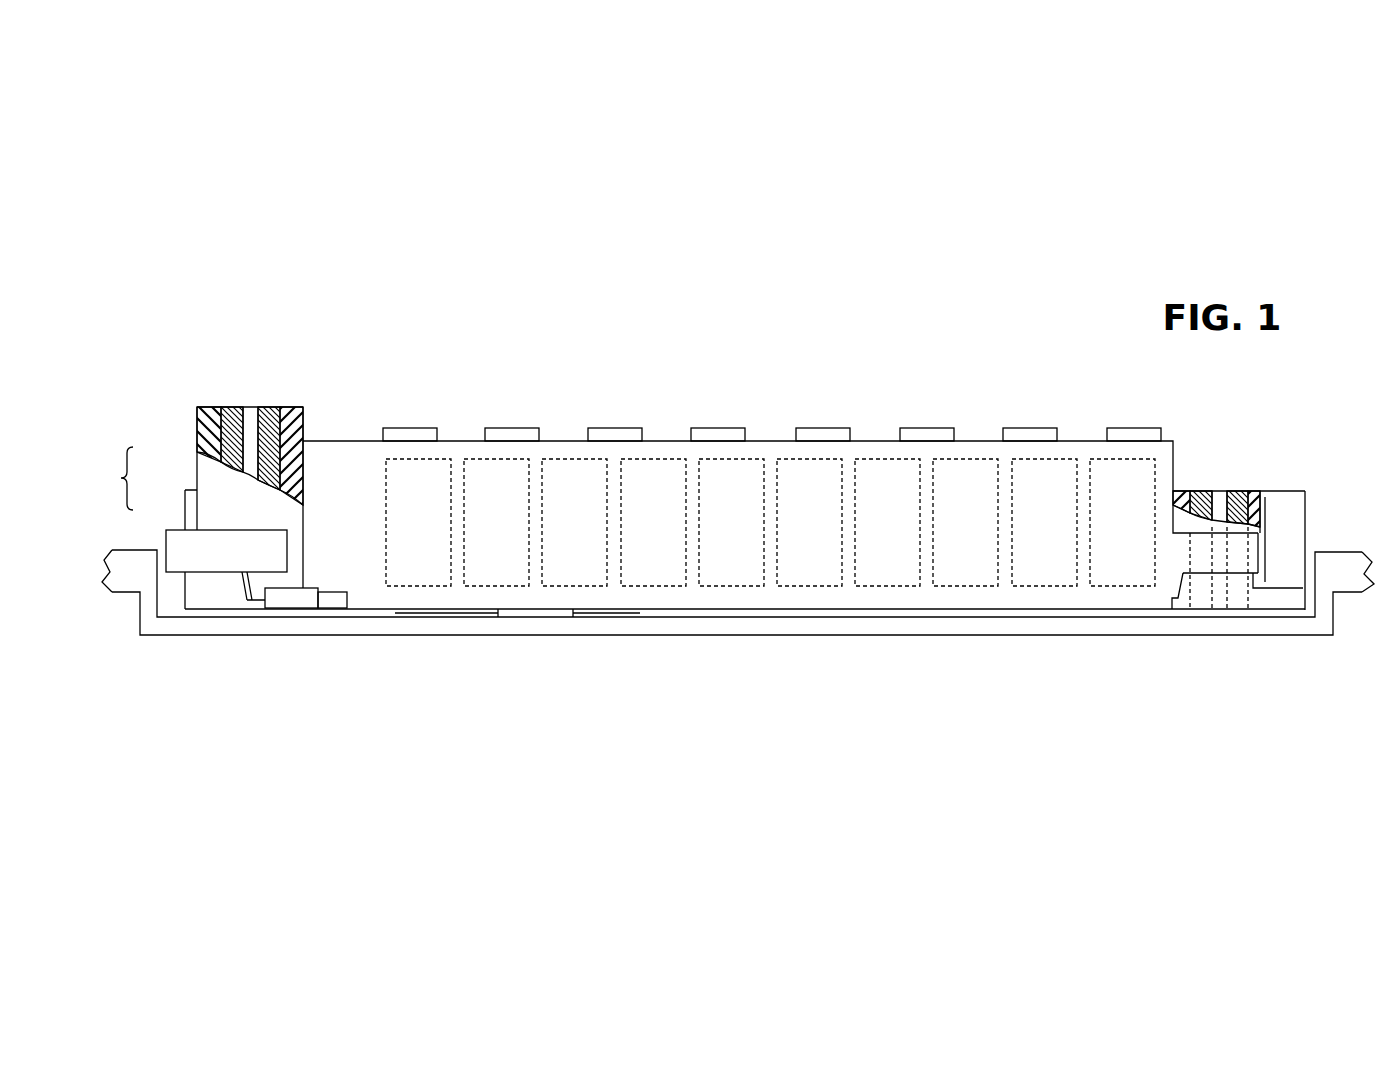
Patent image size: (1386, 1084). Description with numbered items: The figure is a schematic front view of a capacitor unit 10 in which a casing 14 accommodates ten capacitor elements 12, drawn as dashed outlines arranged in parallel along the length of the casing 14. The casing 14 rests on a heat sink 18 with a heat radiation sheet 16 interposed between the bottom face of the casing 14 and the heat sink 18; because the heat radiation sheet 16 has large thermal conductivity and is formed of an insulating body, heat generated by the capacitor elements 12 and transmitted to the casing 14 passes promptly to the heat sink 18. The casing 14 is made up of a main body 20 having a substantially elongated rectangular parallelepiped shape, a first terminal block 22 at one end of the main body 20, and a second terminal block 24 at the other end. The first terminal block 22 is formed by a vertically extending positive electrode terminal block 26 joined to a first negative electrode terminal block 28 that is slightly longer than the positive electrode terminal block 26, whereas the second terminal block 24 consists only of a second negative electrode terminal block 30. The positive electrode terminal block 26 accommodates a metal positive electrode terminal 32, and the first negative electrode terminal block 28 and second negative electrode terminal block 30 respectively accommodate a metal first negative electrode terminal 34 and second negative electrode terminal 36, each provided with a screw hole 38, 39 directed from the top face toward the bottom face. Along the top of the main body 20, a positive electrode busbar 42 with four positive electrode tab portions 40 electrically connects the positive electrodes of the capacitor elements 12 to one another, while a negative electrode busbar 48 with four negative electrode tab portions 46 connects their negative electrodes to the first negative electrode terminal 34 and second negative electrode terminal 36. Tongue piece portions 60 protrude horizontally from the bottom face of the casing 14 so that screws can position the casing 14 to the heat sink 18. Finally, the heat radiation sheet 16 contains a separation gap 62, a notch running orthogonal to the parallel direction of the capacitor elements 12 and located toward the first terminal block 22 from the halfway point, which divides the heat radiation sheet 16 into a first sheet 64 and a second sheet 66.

The capacitor unit 10 is at (1216, 372).
The capacitor element 12 is at (464, 557).
The casing 14 is at (347, 430).
The heat radiation sheet 16 is at (517, 670).
The heat sink 18 is at (1281, 628).
The main body 20 is at (1108, 600).
The first terminal block 22 is at (111, 478).
The second terminal block 24 is at (1294, 512).
The positive electrode terminal block 26 is at (190, 502).
The first negative electrode terminal block 28 is at (207, 466).
The second negative electrode terminal block 30 is at (1255, 497).
The positive electrode terminal 32 is at (233, 503).
The first negative electrode terminal 34 is at (268, 407).
The second negative electrode terminal 36 is at (1200, 495).
The screw hole 38 is at (250, 412).
The screw hole 39 is at (1218, 497).
The positive electrode tab portion 40 is at (720, 415).
The positive electrode busbar 42 is at (1062, 411).
The negative electrode tab portion 46 is at (823, 415).
The negative electrode busbar 48 is at (951, 411).
The tongue piece portion 60 is at (761, 625).
The separation gap 62 is at (498, 609).
The first sheet 64 is at (485, 617).
The second sheet 66 is at (606, 653).